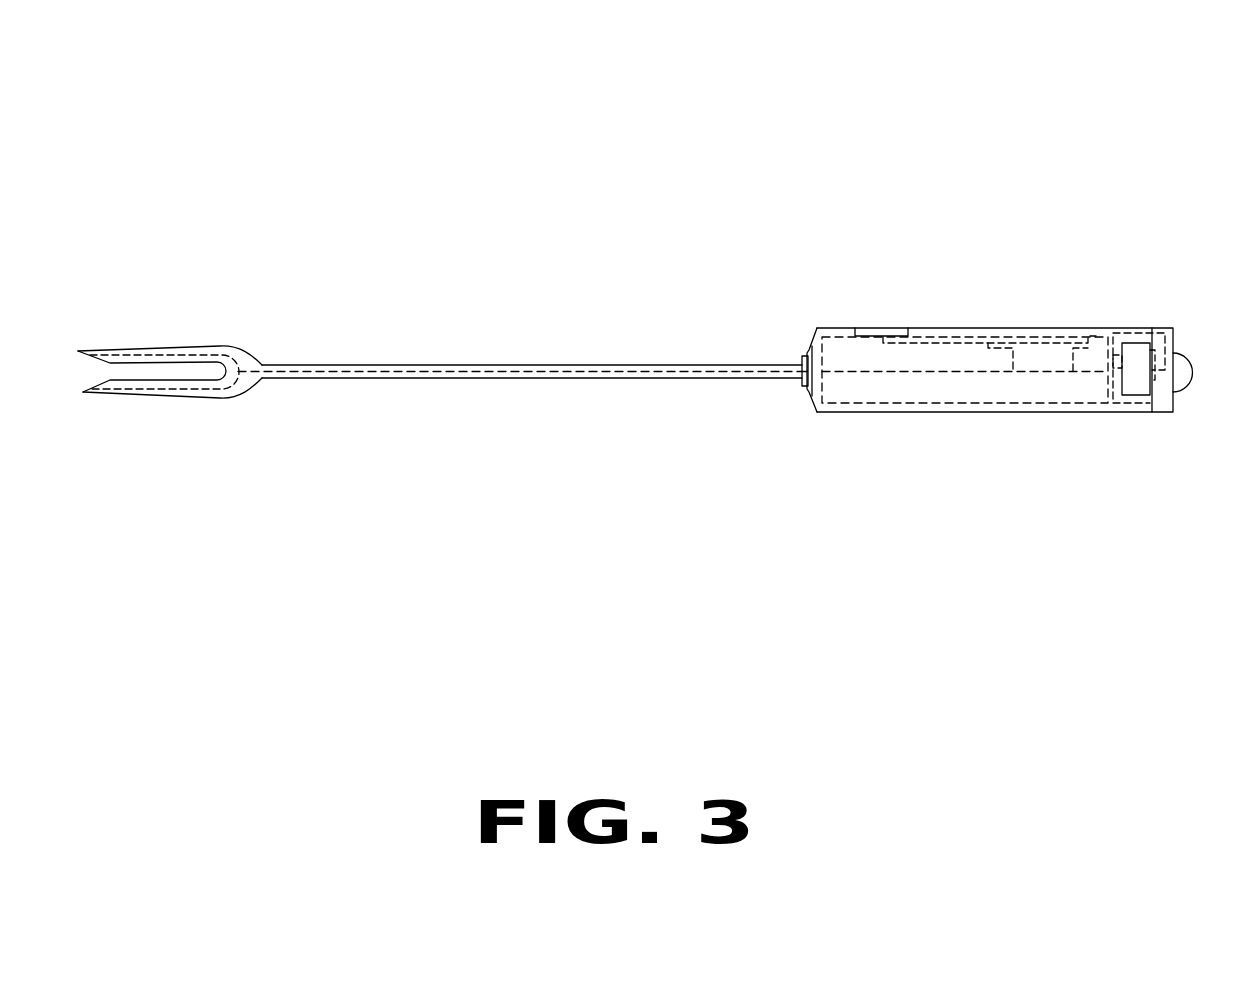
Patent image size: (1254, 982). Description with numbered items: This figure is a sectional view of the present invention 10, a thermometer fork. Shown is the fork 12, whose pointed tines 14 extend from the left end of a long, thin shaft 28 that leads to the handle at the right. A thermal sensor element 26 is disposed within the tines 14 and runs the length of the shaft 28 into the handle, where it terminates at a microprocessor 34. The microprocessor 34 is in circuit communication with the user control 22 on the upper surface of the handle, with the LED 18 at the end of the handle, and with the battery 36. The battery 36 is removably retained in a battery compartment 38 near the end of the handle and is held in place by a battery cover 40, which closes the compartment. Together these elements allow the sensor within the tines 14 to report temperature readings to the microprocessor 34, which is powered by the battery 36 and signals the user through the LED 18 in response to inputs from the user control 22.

The present invention 10 is at (1086, 128).
The fork 12 is at (800, 373).
The tines 14 is at (171, 392).
The LED 18 is at (1186, 345).
The user control 22 is at (880, 332).
The thermal sensor element 26 is at (686, 373).
The shaft 28 is at (456, 365).
The microprocessor 34 is at (1003, 350).
The battery 36 is at (1140, 383).
The battery compartment 38 is at (1133, 330).
The battery cover 40 is at (1173, 398).